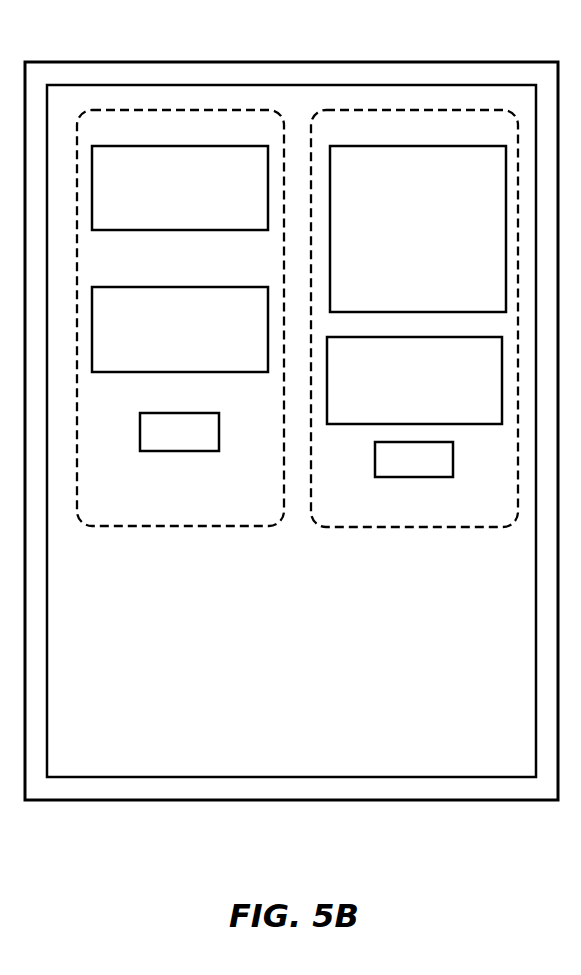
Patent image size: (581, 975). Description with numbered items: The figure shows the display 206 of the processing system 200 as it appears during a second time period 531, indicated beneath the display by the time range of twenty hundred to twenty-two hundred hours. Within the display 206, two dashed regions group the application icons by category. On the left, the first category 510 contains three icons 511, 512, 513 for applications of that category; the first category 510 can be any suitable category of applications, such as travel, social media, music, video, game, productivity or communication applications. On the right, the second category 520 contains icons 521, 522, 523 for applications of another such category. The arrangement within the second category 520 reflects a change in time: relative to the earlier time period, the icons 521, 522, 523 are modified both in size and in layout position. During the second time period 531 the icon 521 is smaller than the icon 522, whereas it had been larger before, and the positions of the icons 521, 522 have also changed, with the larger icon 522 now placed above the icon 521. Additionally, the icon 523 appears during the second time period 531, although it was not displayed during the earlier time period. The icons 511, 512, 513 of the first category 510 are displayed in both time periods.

The processing system 200 is at (90, 62).
The display 206 is at (178, 85).
The first category 510 is at (250, 110).
The icon 511 is at (180, 188).
The icon 512 is at (180, 329).
The icon 513 is at (179, 432).
The second category 520 is at (483, 110).
The icon 521 is at (414, 380).
The icon 522 is at (418, 229).
The icon 523 is at (414, 459).
The second time period 531 is at (350, 839).